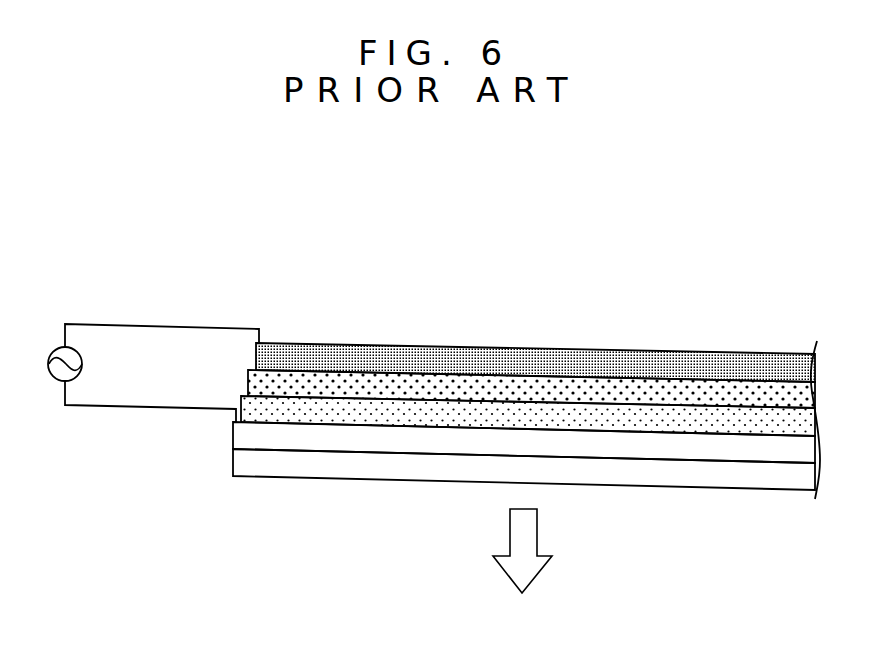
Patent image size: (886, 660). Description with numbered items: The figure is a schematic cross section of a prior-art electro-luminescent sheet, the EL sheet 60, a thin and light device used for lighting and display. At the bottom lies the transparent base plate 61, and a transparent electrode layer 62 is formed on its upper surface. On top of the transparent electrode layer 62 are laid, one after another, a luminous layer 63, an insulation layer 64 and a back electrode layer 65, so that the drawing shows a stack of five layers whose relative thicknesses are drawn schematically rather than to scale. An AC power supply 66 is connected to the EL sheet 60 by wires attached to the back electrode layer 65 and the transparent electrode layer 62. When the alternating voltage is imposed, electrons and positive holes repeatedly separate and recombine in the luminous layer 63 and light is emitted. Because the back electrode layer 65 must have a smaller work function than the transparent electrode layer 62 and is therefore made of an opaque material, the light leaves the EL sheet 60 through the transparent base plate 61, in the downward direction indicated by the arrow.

The EL sheet 60 is at (526, 401).
The transparent base plate 61 is at (320, 466).
The transparent electrode layer 62 is at (373, 443).
The luminous layer 63 is at (425, 414).
The insulation layer 64 is at (348, 389).
The back electrode layer 65 is at (407, 366).
The AC power supply 66 is at (54, 378).